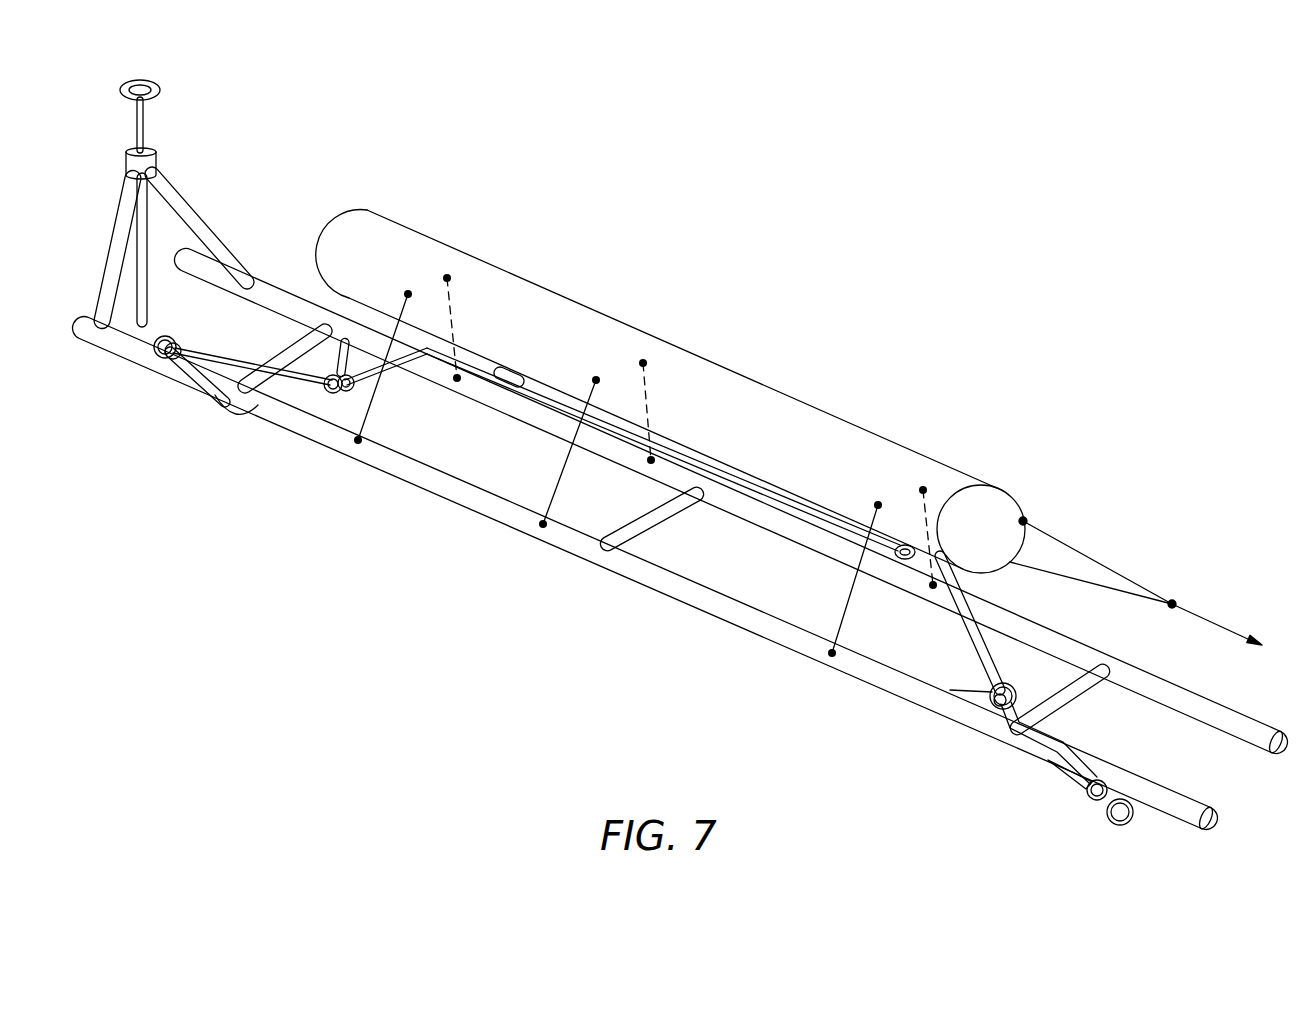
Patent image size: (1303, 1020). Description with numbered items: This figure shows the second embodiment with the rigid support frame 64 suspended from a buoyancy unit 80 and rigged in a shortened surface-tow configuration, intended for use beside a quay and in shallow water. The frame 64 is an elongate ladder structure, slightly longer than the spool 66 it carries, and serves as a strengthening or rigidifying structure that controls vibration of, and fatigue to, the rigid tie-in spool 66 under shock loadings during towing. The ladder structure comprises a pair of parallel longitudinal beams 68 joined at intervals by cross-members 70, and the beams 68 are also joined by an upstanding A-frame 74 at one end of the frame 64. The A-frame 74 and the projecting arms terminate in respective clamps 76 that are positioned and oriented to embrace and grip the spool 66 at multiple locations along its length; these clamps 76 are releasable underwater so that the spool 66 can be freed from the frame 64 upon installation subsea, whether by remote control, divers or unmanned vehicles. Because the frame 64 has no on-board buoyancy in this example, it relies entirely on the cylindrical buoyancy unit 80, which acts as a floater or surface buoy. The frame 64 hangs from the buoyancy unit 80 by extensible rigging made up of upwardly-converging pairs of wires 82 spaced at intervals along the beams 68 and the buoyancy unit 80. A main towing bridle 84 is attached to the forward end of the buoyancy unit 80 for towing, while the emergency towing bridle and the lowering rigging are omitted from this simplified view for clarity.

The rigid support frame 64 is at (402, 521).
The spool 66 is at (217, 410).
The longitudinal beams 68 is at (720, 608).
The cross-members 70 is at (268, 362).
The A-frame 74 is at (196, 205).
The clamps 76 is at (125, 165).
The buoyancy unit 80 is at (776, 392).
The wires 82 is at (463, 313).
The main towing bridle 84 is at (1097, 562).